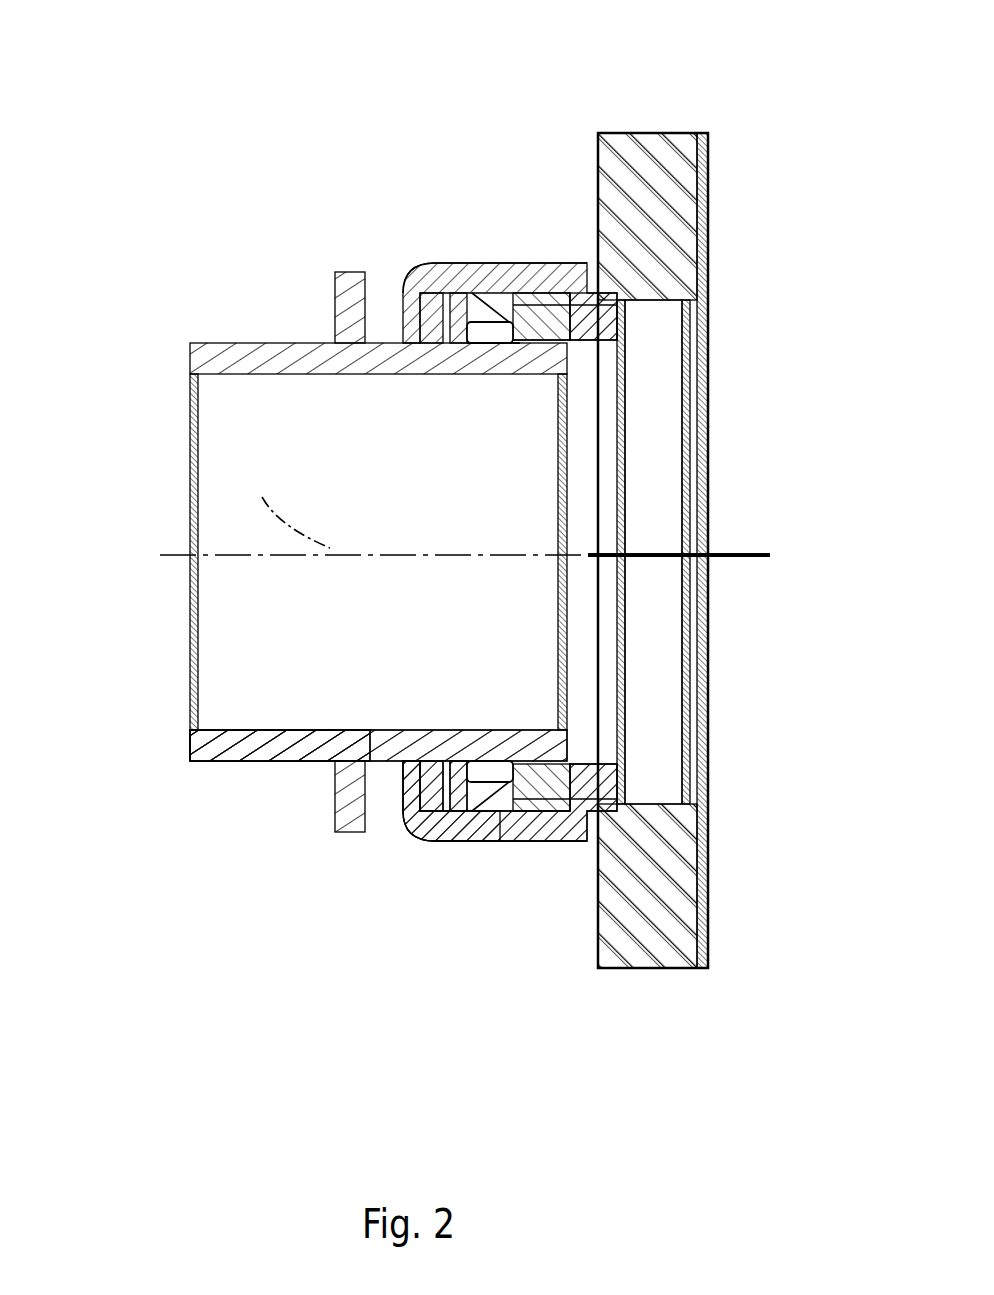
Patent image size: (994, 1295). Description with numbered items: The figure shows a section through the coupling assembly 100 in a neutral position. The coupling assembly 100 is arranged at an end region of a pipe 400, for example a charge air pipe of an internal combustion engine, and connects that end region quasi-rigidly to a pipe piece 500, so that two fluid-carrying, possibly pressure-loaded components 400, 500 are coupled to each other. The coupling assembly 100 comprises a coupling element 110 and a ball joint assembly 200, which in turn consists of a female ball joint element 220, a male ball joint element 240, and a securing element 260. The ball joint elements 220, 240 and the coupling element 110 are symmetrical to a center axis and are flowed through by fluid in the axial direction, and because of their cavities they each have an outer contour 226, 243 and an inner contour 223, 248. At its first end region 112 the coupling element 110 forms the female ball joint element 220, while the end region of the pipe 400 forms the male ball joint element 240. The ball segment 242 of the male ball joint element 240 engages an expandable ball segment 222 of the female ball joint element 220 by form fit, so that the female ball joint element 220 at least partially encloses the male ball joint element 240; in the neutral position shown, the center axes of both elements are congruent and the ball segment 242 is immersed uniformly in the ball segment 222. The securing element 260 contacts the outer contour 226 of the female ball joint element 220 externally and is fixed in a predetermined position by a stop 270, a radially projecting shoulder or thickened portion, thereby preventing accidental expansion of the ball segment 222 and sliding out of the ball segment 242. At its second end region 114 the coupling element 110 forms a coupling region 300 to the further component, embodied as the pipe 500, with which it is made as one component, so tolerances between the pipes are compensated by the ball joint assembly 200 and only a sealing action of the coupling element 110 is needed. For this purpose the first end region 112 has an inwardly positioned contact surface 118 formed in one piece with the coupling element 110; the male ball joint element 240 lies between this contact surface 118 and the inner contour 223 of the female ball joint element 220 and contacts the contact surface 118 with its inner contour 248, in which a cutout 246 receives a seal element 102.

The coupling assembly 100 is at (178, 132).
The coupling element 110 is at (333, 208).
The first end region 112 is at (442, 866).
The second end region 114 is at (243, 768).
The inwardly positioned contact surface 118 is at (500, 340).
The seal element 102 is at (492, 350).
The cutout 246 is at (492, 350).
The ball joint assembly 200 is at (570, 856).
The female ball joint element 220 is at (438, 840).
The expandable ball segment 222 is at (438, 840).
The inner contour 223 is at (569, 313).
The outer contour 226 is at (443, 270).
The male ball joint element 240 is at (465, 841).
The ball segment 242 is at (465, 841).
The outer contour 243 is at (548, 292).
The inner contour 248 is at (546, 358).
The securing element 260 is at (535, 841).
The stop 270 is at (468, 263).
The coupling region 300 is at (232, 746).
The pipe piece 500 is at (232, 746).
The pipe 400 is at (688, 177).